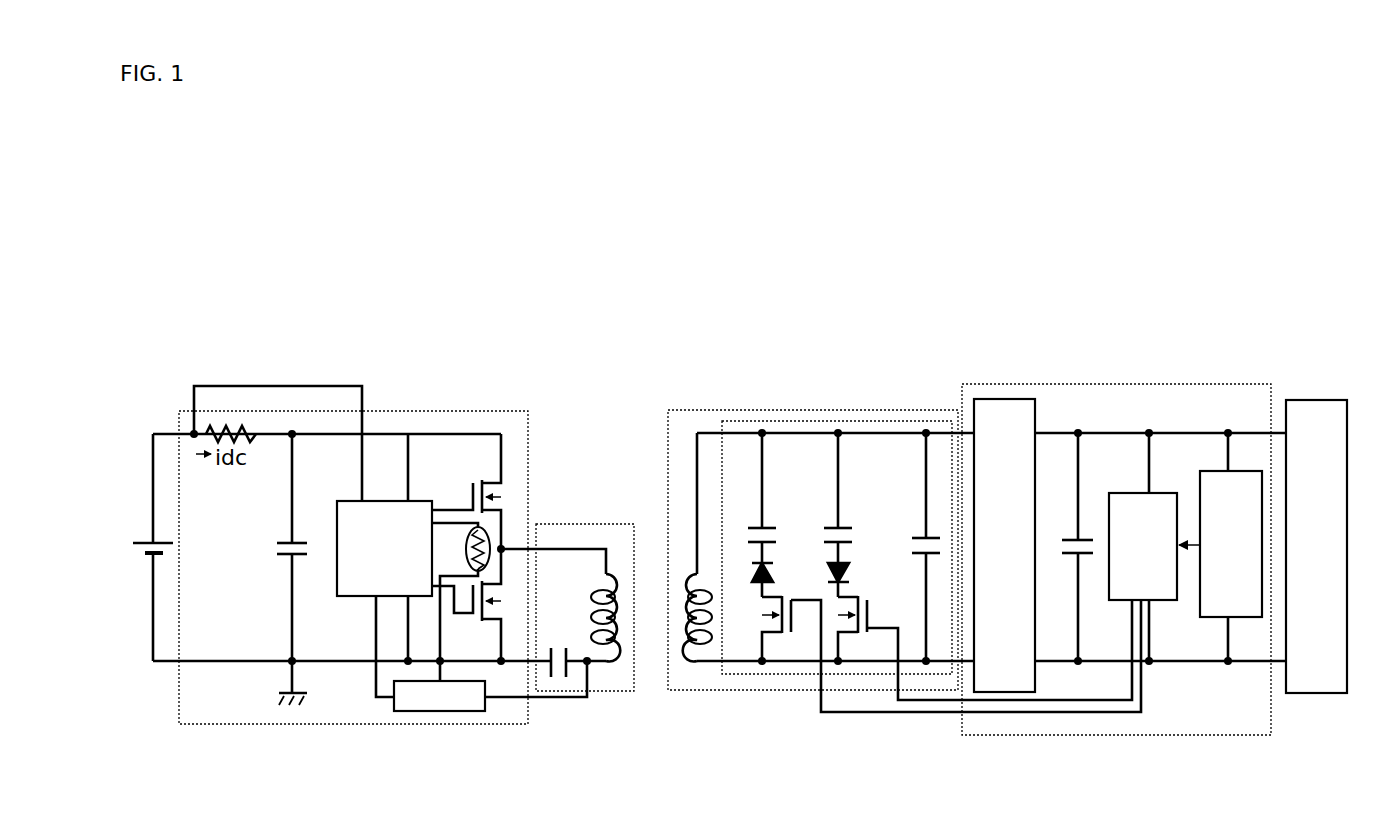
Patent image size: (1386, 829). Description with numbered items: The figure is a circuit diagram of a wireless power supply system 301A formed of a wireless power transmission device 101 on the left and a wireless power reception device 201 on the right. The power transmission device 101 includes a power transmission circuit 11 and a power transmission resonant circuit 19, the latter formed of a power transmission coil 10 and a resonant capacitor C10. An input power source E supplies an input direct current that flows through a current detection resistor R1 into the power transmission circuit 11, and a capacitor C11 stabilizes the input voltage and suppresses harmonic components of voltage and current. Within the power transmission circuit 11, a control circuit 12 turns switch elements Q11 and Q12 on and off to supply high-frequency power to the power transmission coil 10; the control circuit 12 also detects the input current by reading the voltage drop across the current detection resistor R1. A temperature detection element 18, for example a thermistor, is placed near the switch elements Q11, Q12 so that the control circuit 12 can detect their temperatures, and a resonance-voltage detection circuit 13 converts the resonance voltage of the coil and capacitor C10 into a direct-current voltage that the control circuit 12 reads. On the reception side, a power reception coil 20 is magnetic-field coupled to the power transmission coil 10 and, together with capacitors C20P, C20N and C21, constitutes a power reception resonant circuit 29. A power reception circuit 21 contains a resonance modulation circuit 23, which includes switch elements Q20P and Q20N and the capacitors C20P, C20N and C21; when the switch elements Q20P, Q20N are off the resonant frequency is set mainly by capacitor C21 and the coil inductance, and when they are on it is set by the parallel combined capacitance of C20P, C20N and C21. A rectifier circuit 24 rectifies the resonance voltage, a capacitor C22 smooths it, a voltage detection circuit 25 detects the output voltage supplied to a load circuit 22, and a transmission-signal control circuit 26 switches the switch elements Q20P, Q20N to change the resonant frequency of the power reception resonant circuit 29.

The wireless power supply system 301A is at (686, 205).
The wireless power transmission device 101 is at (632, 324).
The wireless power reception device 201 is at (673, 324).
The power transmission circuit 11 is at (400, 411).
The control circuit 12 is at (341, 501).
The resonance-voltage detection circuit 13 is at (442, 711).
The temperature detection element 18 is at (461, 592).
The power transmission resonant circuit 19 is at (584, 524).
The power transmission coil 10 is at (612, 572).
The power reception coil 20 is at (695, 572).
The power reception resonant circuit 29 is at (718, 410).
The resonance modulation circuit 23 is at (792, 421).
The power reception circuit 21 is at (1135, 383).
The load circuit 22 is at (1312, 400).
The rectifier circuit 24 is at (1035, 412).
The voltage detection circuit 25 is at (1240, 471).
The transmission-signal control circuit 26 is at (1163, 493).
The input power source E is at (146, 547).
The current detection resistor R1 is at (244, 427).
The capacitor C11 is at (268, 547).
The switch element Q12 is at (460, 491).
The switch element Q11 is at (466, 605).
The resonant capacitor C10 is at (567, 647).
The capacitor C20N is at (788, 498).
The capacitor C20P is at (863, 498).
The resonant capacitor C21 is at (908, 547).
The capacitor C22 is at (1085, 533).
The switch element Q20N is at (750, 643).
The switch element Q20P is at (852, 640).